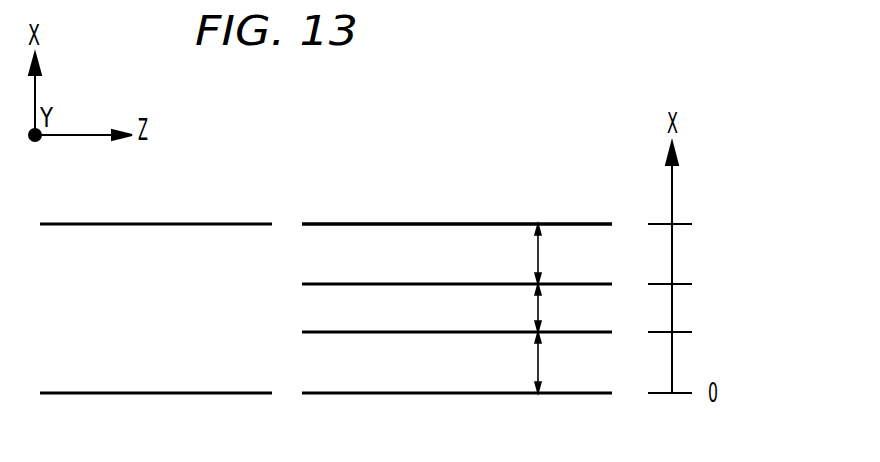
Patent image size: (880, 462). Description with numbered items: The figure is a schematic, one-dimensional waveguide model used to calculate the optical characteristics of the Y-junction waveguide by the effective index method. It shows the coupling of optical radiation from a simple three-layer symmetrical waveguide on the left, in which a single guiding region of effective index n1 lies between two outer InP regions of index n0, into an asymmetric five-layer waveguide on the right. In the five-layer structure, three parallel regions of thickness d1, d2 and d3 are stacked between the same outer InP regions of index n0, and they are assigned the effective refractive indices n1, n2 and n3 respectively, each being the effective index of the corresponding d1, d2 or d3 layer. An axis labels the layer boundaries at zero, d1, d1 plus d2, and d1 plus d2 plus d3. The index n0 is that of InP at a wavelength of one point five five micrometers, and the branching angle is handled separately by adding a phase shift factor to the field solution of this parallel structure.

The refractive index of InP n0 is at (326, 304).
The effective refractive index of the d1 layer n1 is at (333, 340).
The effective refractive index of the d2 layer n2 is at (457, 305).
The effective refractive index of the d3 layer n3 is at (457, 243).
The thickness of the first region d1 is at (630, 354).
The thickness of the second region d2 is at (649, 299).
The thickness of the third region d3 is at (669, 248).